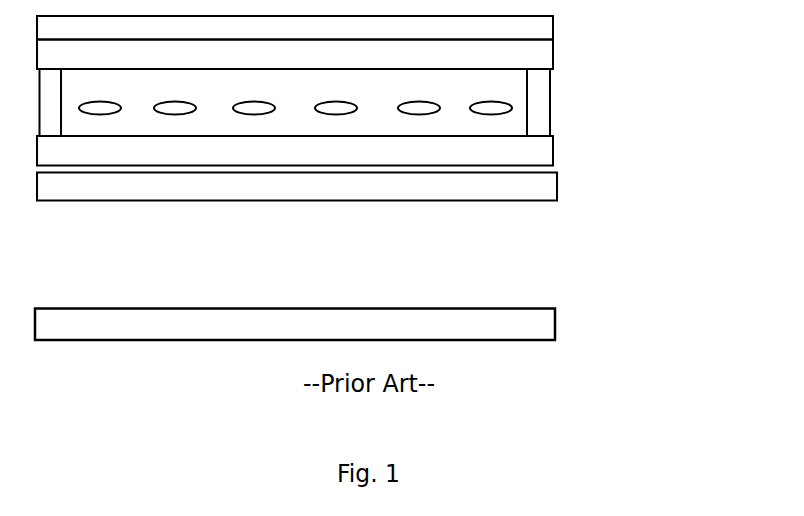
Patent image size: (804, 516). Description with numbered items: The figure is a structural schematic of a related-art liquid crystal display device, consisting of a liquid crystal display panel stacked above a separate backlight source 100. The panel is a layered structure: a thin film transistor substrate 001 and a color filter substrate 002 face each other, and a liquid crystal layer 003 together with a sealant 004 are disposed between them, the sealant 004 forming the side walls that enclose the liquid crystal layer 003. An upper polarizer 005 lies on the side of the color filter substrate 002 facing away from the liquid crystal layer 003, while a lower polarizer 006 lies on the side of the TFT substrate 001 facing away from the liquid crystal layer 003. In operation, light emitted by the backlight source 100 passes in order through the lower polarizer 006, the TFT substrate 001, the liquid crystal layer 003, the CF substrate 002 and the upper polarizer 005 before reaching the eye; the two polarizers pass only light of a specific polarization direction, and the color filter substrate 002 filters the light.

The thin film transistor substrate 001 is at (553, 153).
The color filter substrate 002 is at (553, 56).
The liquid crystal layer 003 is at (508, 112).
The sealant 004 is at (550, 89).
The upper polarizer 005 is at (553, 24).
The lower polarizer 006 is at (557, 185).
The backlight source 100 is at (555, 319).